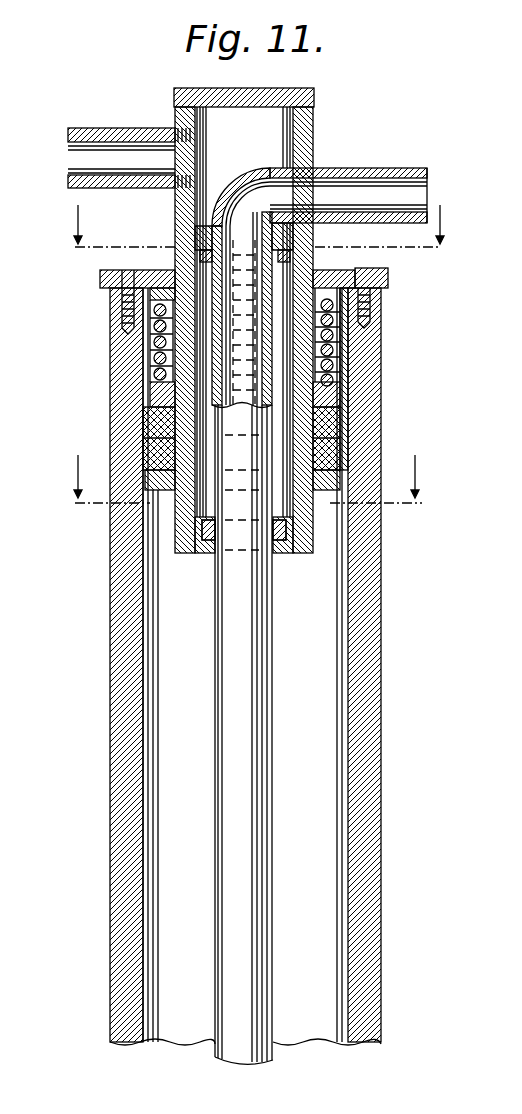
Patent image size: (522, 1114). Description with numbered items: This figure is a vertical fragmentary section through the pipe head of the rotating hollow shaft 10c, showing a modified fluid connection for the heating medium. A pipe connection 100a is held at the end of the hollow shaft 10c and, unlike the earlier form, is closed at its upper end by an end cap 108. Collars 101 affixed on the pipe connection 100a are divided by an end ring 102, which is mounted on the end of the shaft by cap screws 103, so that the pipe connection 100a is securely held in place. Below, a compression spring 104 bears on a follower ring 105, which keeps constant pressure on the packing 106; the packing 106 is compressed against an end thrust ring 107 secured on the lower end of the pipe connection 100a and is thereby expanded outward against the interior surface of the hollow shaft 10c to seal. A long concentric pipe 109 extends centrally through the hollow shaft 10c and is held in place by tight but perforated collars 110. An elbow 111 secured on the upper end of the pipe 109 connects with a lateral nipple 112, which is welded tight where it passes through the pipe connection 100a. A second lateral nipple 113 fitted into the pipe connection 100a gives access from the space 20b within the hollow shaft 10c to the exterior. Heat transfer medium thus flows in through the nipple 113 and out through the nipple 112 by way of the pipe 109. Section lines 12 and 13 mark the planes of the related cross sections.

The hollow shaft 10c is at (372, 571).
The space within the hollow shaft 20b is at (170, 676).
The pipe connection 100a is at (303, 118).
The collars 101 is at (335, 270).
The end ring 102 is at (388, 279).
The cap screws 103 is at (136, 290).
The compression spring 104 is at (330, 338).
The follower ring 105 is at (338, 392).
The packing 106 is at (343, 445).
The end thrust ring 107 is at (333, 500).
The end cap 108 is at (285, 90).
The concentric pipe 109 is at (247, 681).
The perforated collars 110 is at (198, 254).
The elbow 111 is at (240, 178).
The lateral nipple 112 is at (395, 168).
The lateral nipple 113 is at (108, 128).
The section line 12 is at (255, 236).
The section line 13 is at (248, 488).